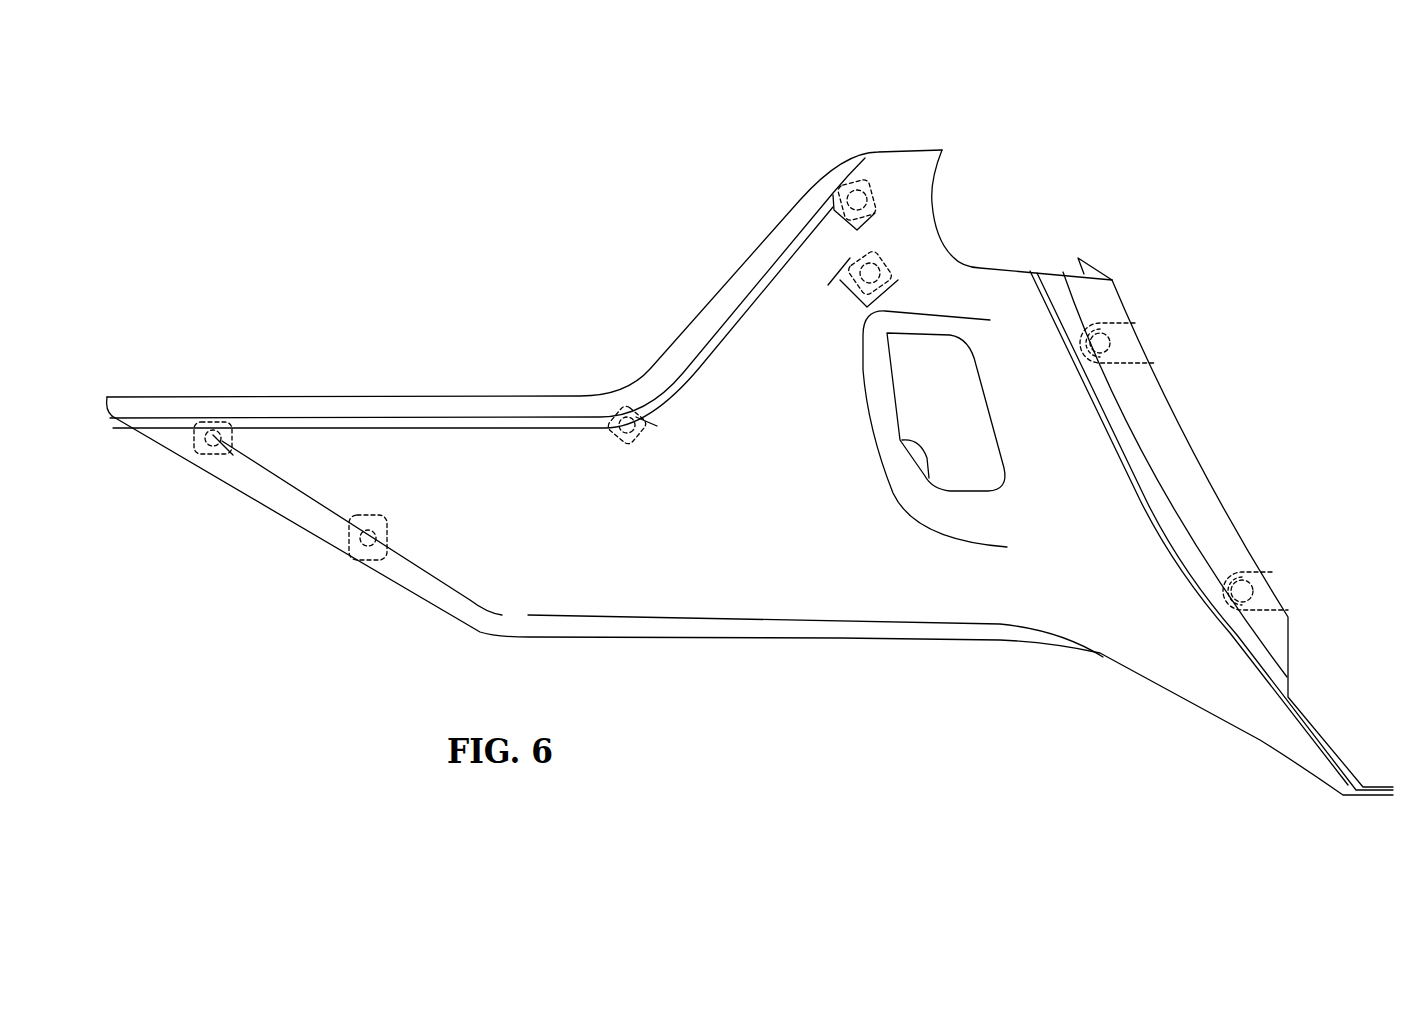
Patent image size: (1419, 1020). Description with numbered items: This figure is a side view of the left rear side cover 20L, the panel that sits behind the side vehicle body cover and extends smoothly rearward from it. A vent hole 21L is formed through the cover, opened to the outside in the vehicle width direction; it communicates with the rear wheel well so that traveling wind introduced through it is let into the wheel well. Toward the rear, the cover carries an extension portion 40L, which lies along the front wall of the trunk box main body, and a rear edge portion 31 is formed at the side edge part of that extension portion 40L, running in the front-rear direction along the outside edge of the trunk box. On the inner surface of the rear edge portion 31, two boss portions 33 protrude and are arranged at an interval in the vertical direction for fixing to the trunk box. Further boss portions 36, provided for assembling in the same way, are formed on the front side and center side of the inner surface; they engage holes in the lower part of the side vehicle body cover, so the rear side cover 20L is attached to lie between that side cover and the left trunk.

The rear side cover 20L is at (1018, 182).
The vent hole 21L is at (928, 475).
The rear edge portion 31 is at (1173, 460).
The boss portion 33 is at (1115, 342).
The boss portion 36 is at (213, 425).
The extension portion 40L is at (1165, 510).